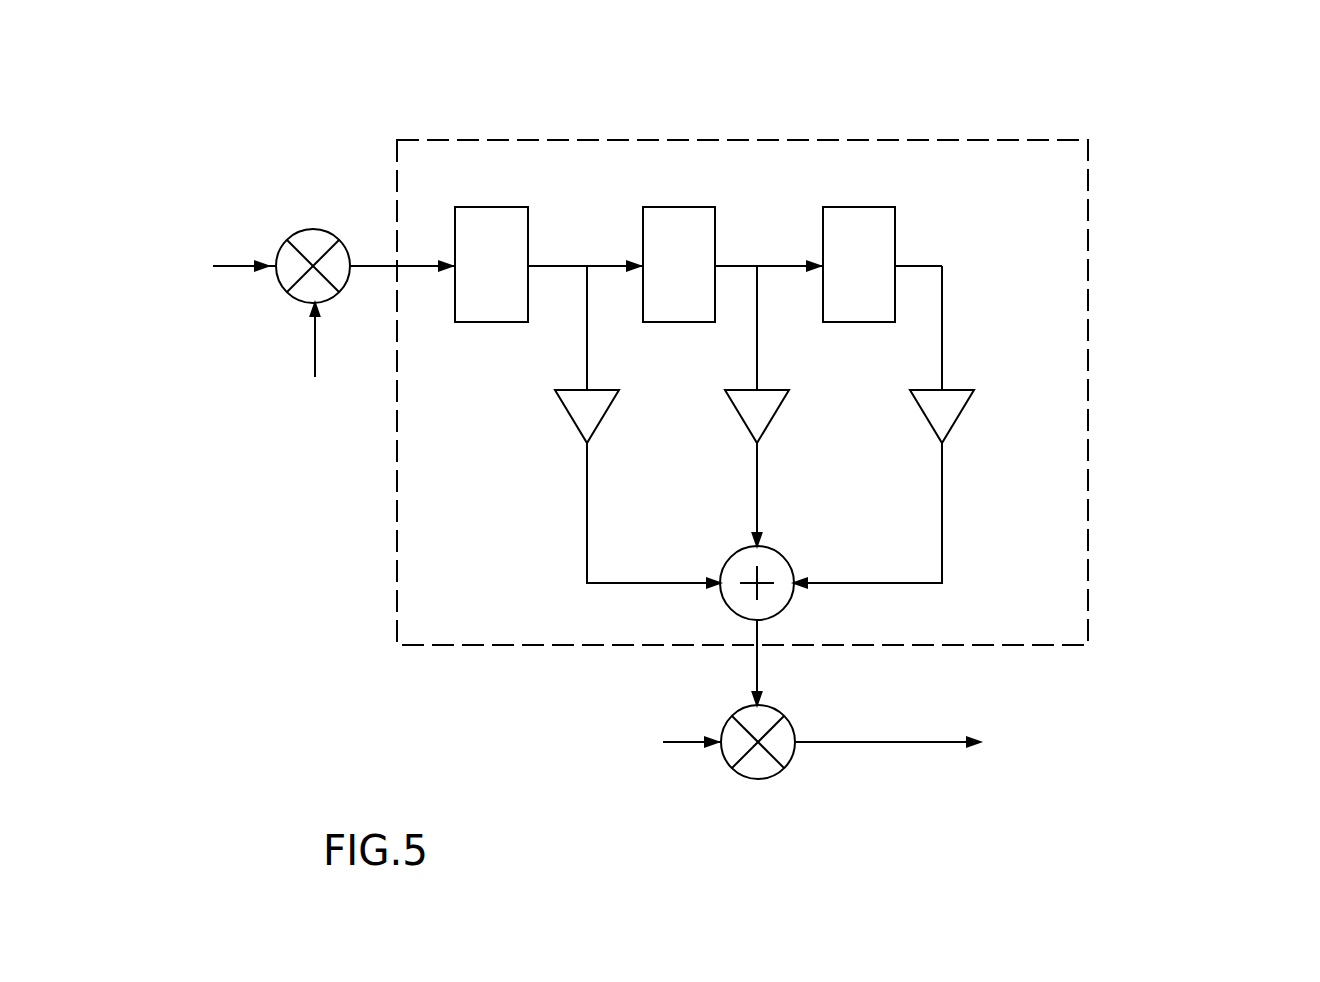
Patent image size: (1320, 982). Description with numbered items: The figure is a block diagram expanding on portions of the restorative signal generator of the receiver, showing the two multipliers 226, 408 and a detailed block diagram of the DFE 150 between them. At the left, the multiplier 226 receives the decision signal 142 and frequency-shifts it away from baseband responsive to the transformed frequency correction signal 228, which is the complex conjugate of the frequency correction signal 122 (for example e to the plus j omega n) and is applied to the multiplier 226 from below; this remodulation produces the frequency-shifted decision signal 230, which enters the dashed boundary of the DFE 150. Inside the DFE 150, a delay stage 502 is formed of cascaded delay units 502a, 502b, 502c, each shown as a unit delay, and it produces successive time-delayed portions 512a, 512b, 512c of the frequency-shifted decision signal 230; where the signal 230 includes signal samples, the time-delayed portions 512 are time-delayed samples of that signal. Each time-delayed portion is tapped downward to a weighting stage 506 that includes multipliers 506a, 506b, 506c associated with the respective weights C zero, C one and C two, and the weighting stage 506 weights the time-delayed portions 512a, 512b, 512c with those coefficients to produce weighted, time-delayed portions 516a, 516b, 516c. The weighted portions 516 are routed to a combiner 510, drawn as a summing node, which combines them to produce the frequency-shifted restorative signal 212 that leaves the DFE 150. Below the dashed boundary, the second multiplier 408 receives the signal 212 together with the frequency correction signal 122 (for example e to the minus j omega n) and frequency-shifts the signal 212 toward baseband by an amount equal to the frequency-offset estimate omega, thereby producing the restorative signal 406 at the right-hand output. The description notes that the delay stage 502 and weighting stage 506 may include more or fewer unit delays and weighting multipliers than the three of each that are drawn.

The decision signal 142 is at (222, 265).
The multiplier 226 is at (318, 229).
The transformed frequency correction signal 228 is at (315, 353).
The frequency-shifted decision signal 230 is at (373, 265).
The DFE 150 is at (782, 140).
The delay stage 502 is at (749, 182).
The delay unit 502a is at (493, 207).
The delay unit 502b is at (672, 207).
The delay unit 502c is at (858, 207).
The time-delayed portions 512 is at (918, 283).
The time-delayed portion 512a is at (580, 265).
The time-delayed portion 512b is at (757, 265).
The time-delayed portion 512c is at (942, 266).
The weighting stage 506 is at (857, 401).
The multiplier 506a is at (607, 388).
The multiplier 506b is at (777, 388).
The multiplier 506c is at (965, 385).
The weighted, time-delayed portions 516 is at (938, 515).
The weighted, time-delayed portion 516a is at (588, 513).
The weighted, time-delayed portion 516b is at (758, 492).
The weighted, time-delayed portion 516c is at (942, 520).
The combiner 510 is at (730, 608).
The frequency-shifted restorative signal 212 is at (758, 663).
The second multiplier 408 is at (787, 765).
The frequency correction signal 122 is at (687, 743).
The restorative signal 406 is at (913, 743).